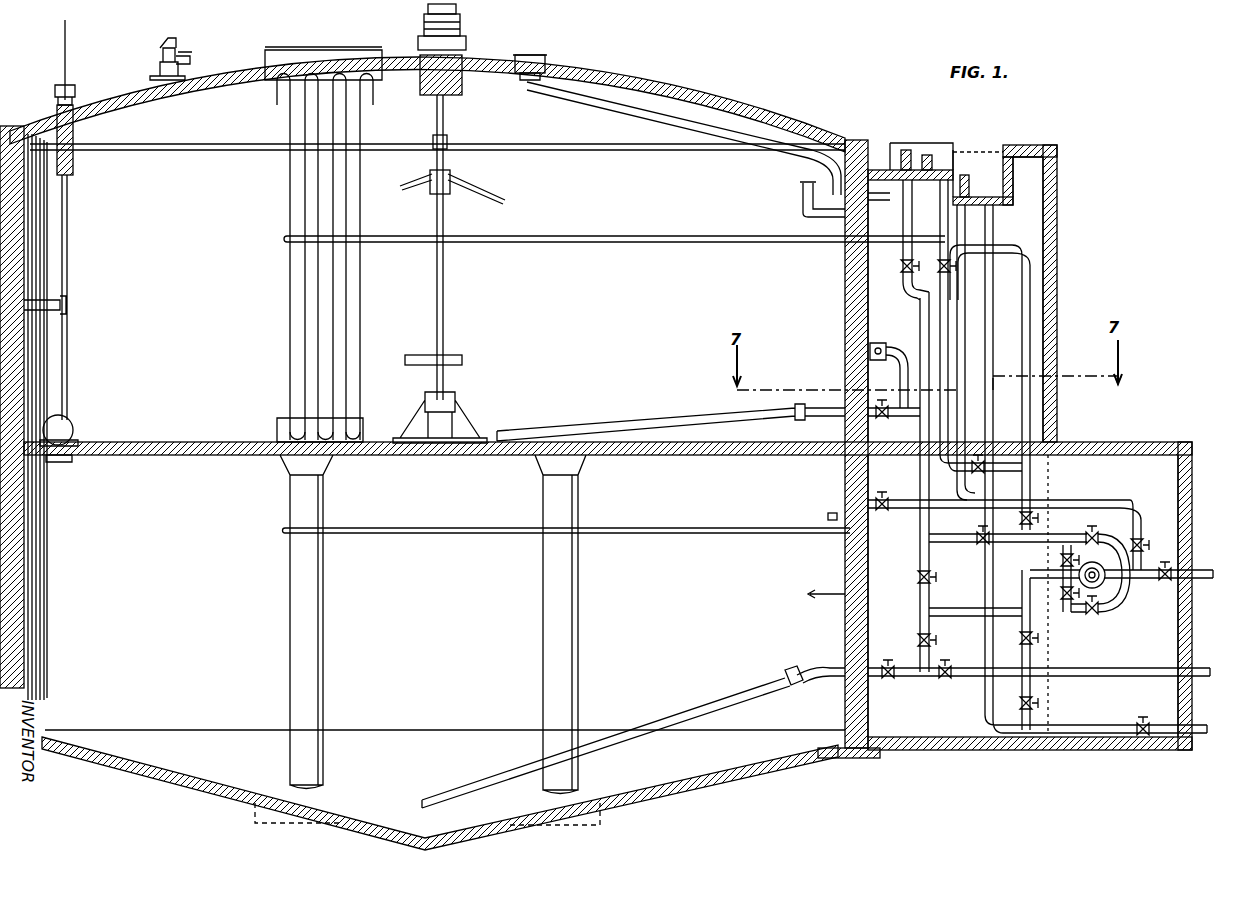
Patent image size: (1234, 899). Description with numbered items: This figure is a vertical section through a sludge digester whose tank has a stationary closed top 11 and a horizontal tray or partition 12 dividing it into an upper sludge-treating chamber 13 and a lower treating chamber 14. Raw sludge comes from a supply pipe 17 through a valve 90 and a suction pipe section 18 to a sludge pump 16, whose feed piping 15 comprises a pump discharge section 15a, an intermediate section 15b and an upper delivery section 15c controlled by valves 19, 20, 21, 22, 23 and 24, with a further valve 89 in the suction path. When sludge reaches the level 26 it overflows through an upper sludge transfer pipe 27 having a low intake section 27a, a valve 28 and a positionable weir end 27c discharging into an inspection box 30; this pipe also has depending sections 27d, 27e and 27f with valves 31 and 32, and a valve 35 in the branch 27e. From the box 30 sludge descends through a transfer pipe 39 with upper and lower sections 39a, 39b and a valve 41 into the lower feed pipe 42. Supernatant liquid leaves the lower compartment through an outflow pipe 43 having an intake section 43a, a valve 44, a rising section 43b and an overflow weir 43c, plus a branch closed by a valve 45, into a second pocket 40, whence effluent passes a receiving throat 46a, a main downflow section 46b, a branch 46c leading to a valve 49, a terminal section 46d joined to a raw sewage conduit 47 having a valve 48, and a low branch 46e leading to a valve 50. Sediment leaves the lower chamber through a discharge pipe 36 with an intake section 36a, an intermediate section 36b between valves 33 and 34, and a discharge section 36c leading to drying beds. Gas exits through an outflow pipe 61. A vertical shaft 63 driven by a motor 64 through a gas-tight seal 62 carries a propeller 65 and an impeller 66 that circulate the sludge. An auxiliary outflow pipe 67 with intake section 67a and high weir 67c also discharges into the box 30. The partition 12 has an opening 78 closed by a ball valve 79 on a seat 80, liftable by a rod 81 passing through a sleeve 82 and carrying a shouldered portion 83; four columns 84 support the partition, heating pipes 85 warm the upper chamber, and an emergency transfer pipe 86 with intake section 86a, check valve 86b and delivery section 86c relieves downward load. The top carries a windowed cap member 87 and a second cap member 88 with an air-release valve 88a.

The stationary closed top 11 is at (738, 96).
The horizontal tray or partition 12 is at (190, 458).
The upper sludge-treating chamber 13 is at (594, 298).
The lower treating chamber 14 is at (443, 734).
The feed piping 15 is at (702, 212).
The pump discharge section 15a is at (1030, 618).
The intermediate section 15b is at (1034, 544).
The upper feed delivery section 15c is at (730, 238).
The sludge pump 16 is at (1090, 585).
The raw-sludge supply pipe 17 is at (1170, 584).
The suction pipe section 18 is at (1100, 614).
The valve 19 is at (1067, 612).
The valve 20 is at (1092, 534).
The valve 21 is at (1100, 505).
The valve 22 is at (980, 546).
The valve 23 is at (1020, 642).
The valve 24 is at (1040, 519).
The normal liquid level 26 is at (590, 152).
The upper sludge transfer pipe 27 is at (668, 394).
The low intake section 27a is at (715, 416).
The upper weir end 27c is at (950, 150).
The downwardly extending section 27d is at (845, 548).
The lateral branch section 27e is at (920, 608).
The lowermost section 27f is at (920, 650).
The valve 28 is at (845, 430).
The inspection box 30 is at (928, 147).
The valve 31 is at (934, 578).
The valve 32 is at (934, 641).
The valve 33 is at (890, 680).
The valve 34 is at (942, 678).
The valve 35 is at (903, 266).
The sediment discharge pipe 36 is at (668, 694).
The low intake section 36a is at (712, 718).
The intermediate section 36b is at (916, 680).
The discharge section 36c is at (1098, 690).
The descending sludge-transfer pipe 39 is at (950, 310).
The upper section 39a is at (968, 228).
The lower section 39b is at (940, 338).
The second inspection or transfer pocket 40 is at (1005, 150).
The valve 41 is at (955, 266).
The secondary feed pipe 42 is at (622, 530).
The supernatant liquid outflow pipe 43 is at (986, 466).
The intake section 43a is at (828, 517).
The rising section 43b is at (998, 296).
The overflow weir 43c is at (983, 177).
The valve 44 is at (845, 486).
The valve 45 is at (968, 497).
The receiving throat 46a is at (1012, 200).
The main downflow section 46b is at (1026, 392).
The intermediate branch 46c is at (1120, 505).
The terminal section 46d is at (1088, 740).
The low branch 46e is at (1036, 718).
The raw sewage pipe 47 is at (1158, 740).
The valve 48 is at (1143, 722).
The valve 49 is at (1142, 540).
The valve 50 is at (1040, 706).
The gas outflow pipe 61 is at (608, 108).
The gas-tight seal 62 is at (463, 92).
The vertical shaft 63 is at (444, 296).
The motor 64 is at (460, 36).
The propeller 65 is at (486, 200).
The impeller 66 is at (464, 360).
The auxiliary outflow pipe 67 is at (785, 206).
The intake section 67a is at (820, 212).
The high overflow weir section 67c is at (906, 148).
The opening 78 is at (58, 462).
The ball valve 79 is at (68, 420).
The seat 80 is at (80, 442).
The rod 81 is at (68, 230).
The sleeve 82 is at (74, 160).
The shouldered portion 83 is at (55, 88).
The columns 84 is at (290, 612).
The heating pipes 85 is at (282, 285).
The emergency transfer pipe 86 is at (790, 378).
The intake section 86a is at (860, 345).
The check valve 86b is at (845, 380).
The delivery section 86c is at (845, 568).
The cap member 87 is at (548, 56).
The second cap member 88 is at (150, 78).
The valve 88a is at (182, 58).
The valve 89 is at (1080, 615).
The valve 90 is at (1165, 568).